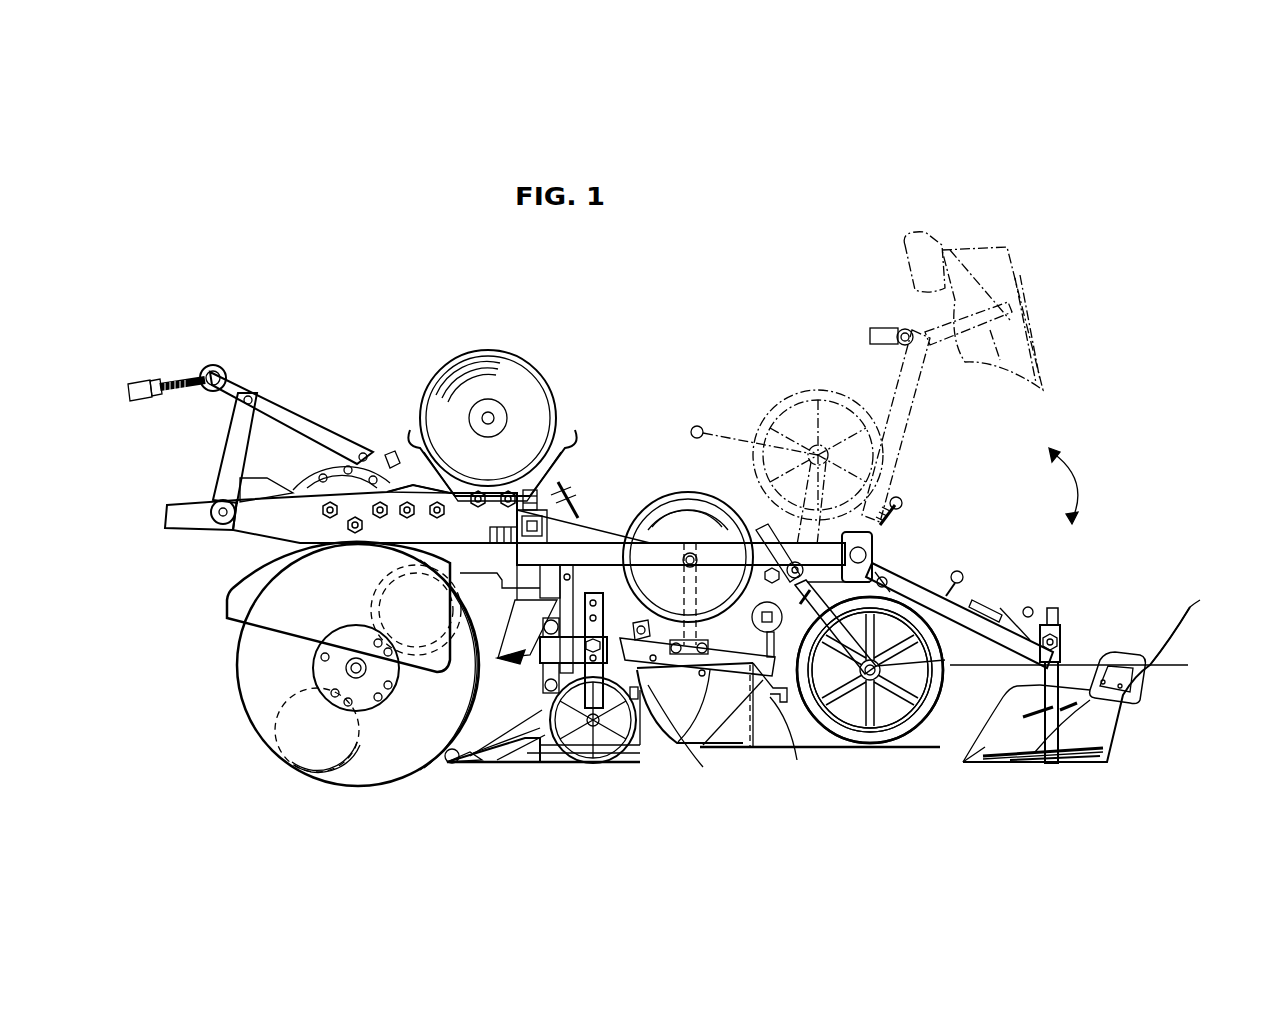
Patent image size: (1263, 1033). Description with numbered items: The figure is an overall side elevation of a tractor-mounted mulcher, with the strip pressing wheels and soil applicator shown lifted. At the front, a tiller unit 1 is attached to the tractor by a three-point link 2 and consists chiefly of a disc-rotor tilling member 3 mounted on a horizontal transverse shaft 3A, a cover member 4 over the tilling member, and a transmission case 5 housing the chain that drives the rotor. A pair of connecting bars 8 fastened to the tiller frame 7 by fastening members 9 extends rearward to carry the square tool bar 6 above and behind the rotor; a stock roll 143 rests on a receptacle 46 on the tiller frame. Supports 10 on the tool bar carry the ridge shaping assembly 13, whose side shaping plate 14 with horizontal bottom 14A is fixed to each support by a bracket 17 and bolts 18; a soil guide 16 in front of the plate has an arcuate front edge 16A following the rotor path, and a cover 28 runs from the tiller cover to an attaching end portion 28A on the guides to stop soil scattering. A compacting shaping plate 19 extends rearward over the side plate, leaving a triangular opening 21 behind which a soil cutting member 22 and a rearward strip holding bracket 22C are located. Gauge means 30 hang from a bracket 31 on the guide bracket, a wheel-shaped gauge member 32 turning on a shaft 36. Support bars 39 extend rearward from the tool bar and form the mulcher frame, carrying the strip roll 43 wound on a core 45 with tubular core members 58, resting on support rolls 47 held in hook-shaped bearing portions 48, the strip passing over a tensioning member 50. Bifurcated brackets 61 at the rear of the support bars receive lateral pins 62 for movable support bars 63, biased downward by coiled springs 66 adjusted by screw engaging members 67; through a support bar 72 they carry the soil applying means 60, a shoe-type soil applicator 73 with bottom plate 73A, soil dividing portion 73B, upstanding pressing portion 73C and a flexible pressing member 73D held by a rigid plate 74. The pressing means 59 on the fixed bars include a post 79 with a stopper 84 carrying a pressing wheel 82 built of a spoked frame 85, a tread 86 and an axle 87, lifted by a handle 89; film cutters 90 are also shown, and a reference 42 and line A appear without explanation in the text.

The tiller unit 1 is at (212, 627).
The three-point link 2 is at (178, 366).
The tilling member 3 is at (262, 724).
The horizontal transverse shaft 3A is at (362, 678).
The cover member 4 is at (238, 584).
The transmission case 5 is at (328, 468).
The tool bar 6 is at (547, 530).
The tiller frame 7 is at (412, 491).
The connecting bars 8 is at (476, 522).
The fastening members 9 is at (412, 517).
The supports 10 is at (525, 603).
The ridge shaping assembly 13 is at (528, 770).
The side shaping plate 14 is at (548, 766).
The horizontal bottom 14A is at (578, 766).
The soil guide 16 is at (477, 770).
The arcuate front edge 16A is at (451, 765).
The bracket 17 is at (520, 736).
The bolts 18 is at (513, 655).
The compacting shaping plate 19 is at (755, 746).
The triangular opening 21 is at (690, 755).
The soil cutting member 22 is at (745, 752).
The strip holding bracket 22C is at (787, 708).
The cover 28 is at (408, 570).
The attaching end portion 28A is at (447, 590).
The gauge means 30 is at (645, 700).
The bracket 31 is at (541, 668).
The gauge member 32 is at (636, 700).
The shaft 36 is at (588, 758).
The support bars 39 is at (612, 555).
The rod 42 is at (697, 556).
The roll 43 is at (668, 514).
The core 45 is at (500, 410).
The receptacle 46 is at (562, 436).
The support rolls 47 is at (697, 648).
The bearing portions 48 is at (690, 548).
The strip tensioning member 50 is at (786, 546).
The tubular core member 58 is at (505, 428).
The pressing means 59 is at (905, 752).
The soil applying means 60 is at (1099, 628).
The bifurcated brackets 61 is at (882, 522).
The lateral pins 62 is at (878, 542).
The movable support bars 63 is at (905, 415).
The coiled springs 66 is at (885, 577).
The screw engaging members 67 is at (955, 567).
The support bar 72 is at (1051, 740).
The soil applicator 73 is at (962, 243).
The bottom plate 73A is at (1095, 758).
The soil dividing portion 73B is at (975, 765).
The upstanding pressing portion 73C is at (1130, 688).
The curved flexible pressing member 73D is at (1115, 655).
The rigid plate 74 is at (1186, 616).
The post 79 is at (785, 690).
The pressing wheel 82 is at (830, 388).
The stopper 84 is at (796, 598).
The spoked frame 85 is at (862, 745).
The tread 86 is at (938, 708).
The axle 87 is at (938, 680).
The handle 89 is at (710, 428).
The film cutters 90 is at (984, 598).
The stock roll 143 is at (535, 372).
The reference line A is at (1190, 663).